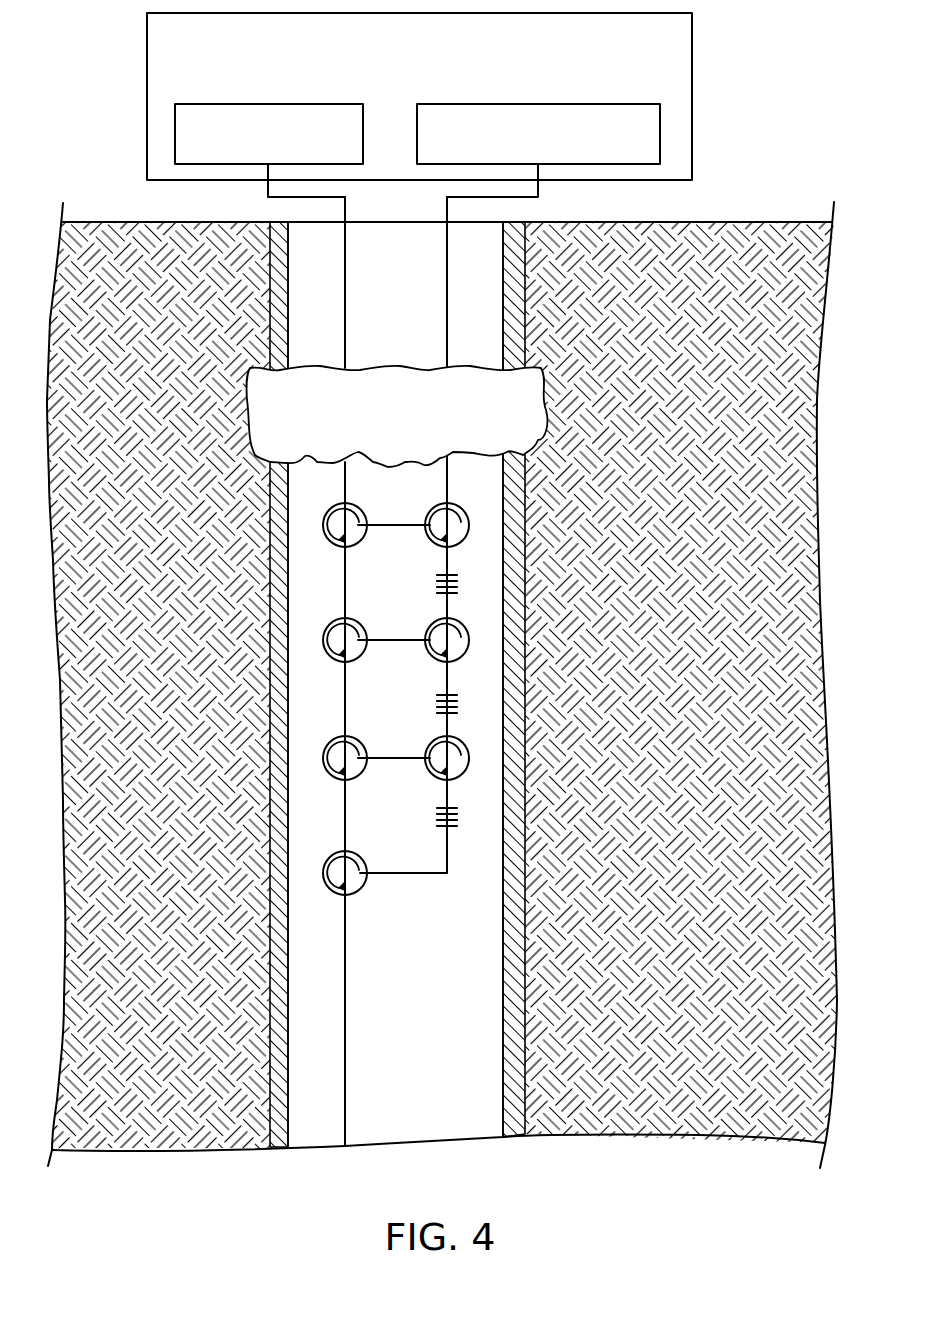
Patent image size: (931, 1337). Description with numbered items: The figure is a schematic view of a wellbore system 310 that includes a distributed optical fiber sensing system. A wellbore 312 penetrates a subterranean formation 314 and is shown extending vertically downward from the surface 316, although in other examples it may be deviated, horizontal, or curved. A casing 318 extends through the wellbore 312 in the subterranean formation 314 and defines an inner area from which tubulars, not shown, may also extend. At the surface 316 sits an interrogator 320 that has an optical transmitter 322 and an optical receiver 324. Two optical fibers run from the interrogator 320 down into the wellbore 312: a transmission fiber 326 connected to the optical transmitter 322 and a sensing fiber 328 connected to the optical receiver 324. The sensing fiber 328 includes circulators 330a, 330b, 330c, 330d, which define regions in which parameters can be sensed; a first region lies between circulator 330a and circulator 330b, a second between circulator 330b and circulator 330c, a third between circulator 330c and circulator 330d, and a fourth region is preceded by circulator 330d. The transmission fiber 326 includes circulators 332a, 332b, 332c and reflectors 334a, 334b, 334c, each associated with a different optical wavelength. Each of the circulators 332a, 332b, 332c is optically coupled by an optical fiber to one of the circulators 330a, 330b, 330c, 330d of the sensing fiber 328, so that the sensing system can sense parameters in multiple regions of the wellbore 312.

The wellbore system 310 is at (440, 609).
The wellbore 312 is at (316, 1144).
The subterranean formation 314 is at (640, 558).
The surface 316 is at (727, 222).
The casing 318 is at (527, 491).
The interrogator 320 is at (455, 96).
The optical transmitter 322 is at (536, 104).
The optical receiver 324 is at (266, 103).
The transmission fiber 326 is at (446, 343).
The sensing fiber 328 is at (351, 284).
The circulator 330a is at (334, 545).
The circulator 330b is at (334, 660).
The circulator 330c is at (334, 778).
The circulator 330d is at (334, 893).
The circulator 332a is at (438, 508).
The circulator 332b is at (432, 623).
The circulator 332c is at (432, 741).
The reflector 334a is at (451, 596).
The reflector 334b is at (451, 715).
The reflector 334c is at (451, 829).